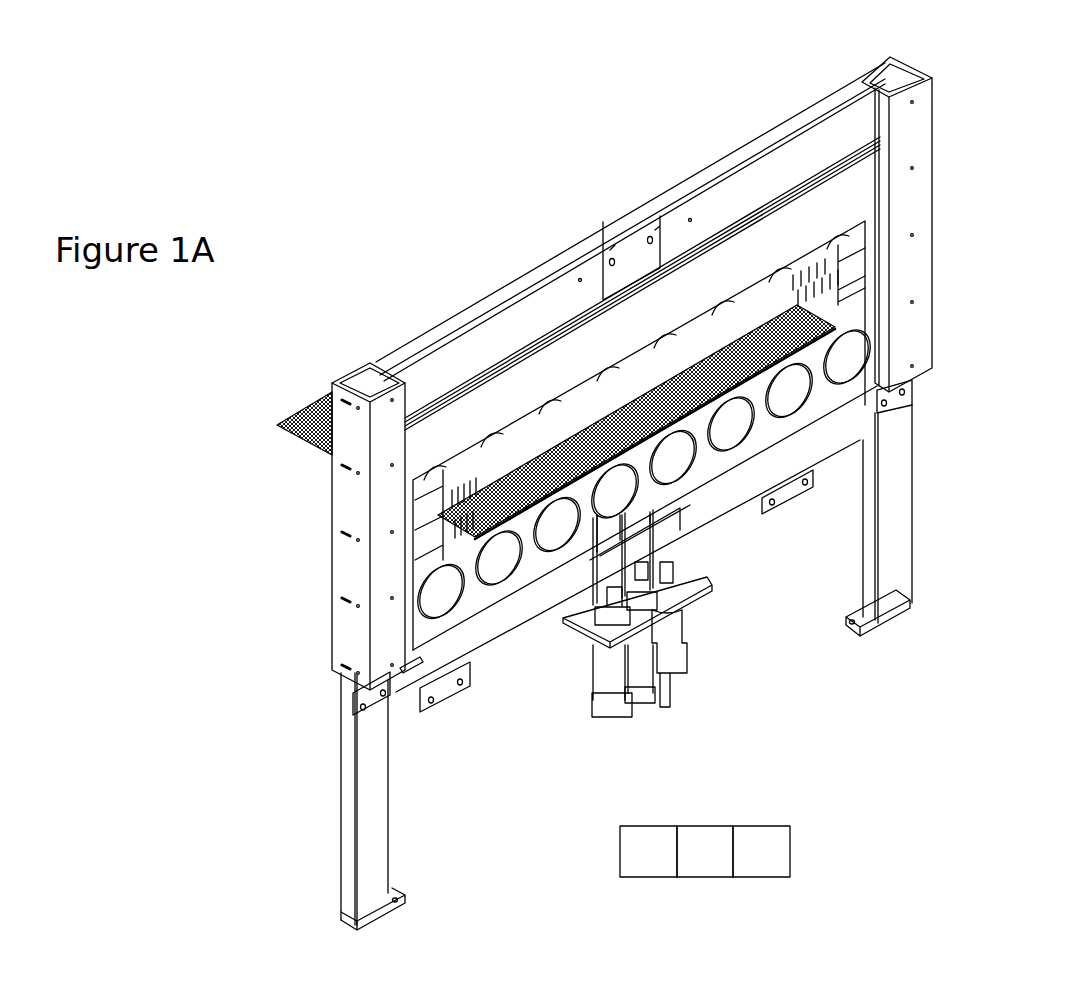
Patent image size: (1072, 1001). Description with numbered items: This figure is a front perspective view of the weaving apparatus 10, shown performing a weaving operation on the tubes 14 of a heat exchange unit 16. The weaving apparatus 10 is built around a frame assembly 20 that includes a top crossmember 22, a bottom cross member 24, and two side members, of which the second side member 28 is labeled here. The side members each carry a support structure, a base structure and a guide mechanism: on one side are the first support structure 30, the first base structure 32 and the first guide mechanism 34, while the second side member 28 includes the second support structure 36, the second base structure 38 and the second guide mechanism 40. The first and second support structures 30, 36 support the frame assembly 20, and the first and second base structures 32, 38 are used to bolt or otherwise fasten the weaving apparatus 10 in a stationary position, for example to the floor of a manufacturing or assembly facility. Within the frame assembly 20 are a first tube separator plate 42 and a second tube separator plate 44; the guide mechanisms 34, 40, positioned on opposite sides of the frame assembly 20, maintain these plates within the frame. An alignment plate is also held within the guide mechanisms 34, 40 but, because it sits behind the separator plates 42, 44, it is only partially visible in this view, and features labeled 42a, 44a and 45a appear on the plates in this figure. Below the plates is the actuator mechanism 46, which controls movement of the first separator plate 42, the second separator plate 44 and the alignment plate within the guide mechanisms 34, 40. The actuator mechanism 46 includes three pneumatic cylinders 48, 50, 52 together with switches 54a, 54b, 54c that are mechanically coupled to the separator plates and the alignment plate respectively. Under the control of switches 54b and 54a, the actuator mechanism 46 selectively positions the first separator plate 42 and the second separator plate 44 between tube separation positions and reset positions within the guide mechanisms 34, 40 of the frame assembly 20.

The weaving apparatus 10 is at (940, 770).
The tubes 14 is at (840, 327).
The heat exchange unit 16 is at (282, 480).
The frame assembly 20 is at (635, 138).
The top crossmember 22 is at (540, 272).
The bottom cross member 24 is at (487, 633).
The second side member 28 is at (960, 496).
The first support structure 30 is at (390, 795).
The first base structure 32 is at (398, 893).
The first guide mechanism 34 is at (364, 515).
The second support structure 36 is at (890, 567).
The second base structure 38 is at (872, 628).
The second guide mechanism 40 is at (918, 195).
The first tube separator plate 42 is at (604, 415).
The panel slot 42a is at (637, 550).
The second tube separator plate 44 is at (547, 583).
The bracket edge 44a is at (667, 525).
The sensor rod 45a is at (605, 562).
The actuator mechanism 46 is at (710, 750).
The pneumatic cylinder 48 is at (683, 618).
The pneumatic cylinder 50 is at (659, 673).
The pneumatic cylinder 52 is at (629, 687).
The switch 54a is at (761, 851).
The switch 54b is at (705, 851).
The switch 54c is at (586, 640).